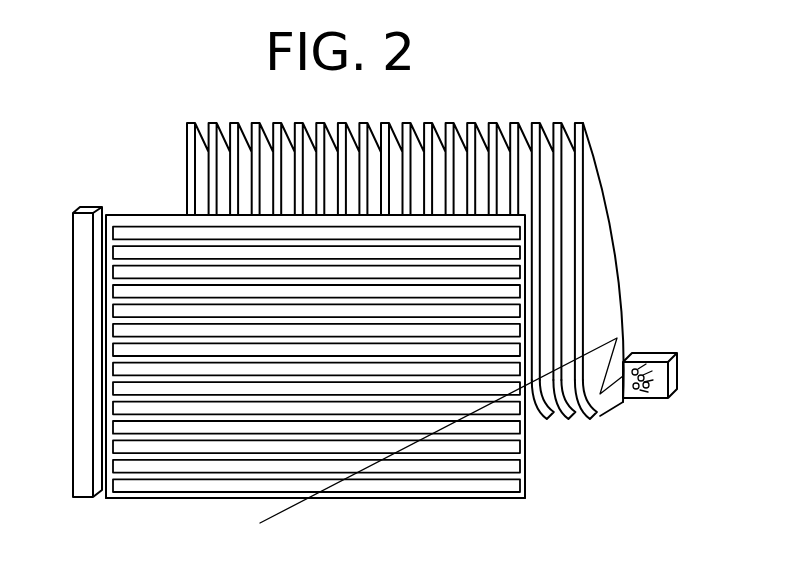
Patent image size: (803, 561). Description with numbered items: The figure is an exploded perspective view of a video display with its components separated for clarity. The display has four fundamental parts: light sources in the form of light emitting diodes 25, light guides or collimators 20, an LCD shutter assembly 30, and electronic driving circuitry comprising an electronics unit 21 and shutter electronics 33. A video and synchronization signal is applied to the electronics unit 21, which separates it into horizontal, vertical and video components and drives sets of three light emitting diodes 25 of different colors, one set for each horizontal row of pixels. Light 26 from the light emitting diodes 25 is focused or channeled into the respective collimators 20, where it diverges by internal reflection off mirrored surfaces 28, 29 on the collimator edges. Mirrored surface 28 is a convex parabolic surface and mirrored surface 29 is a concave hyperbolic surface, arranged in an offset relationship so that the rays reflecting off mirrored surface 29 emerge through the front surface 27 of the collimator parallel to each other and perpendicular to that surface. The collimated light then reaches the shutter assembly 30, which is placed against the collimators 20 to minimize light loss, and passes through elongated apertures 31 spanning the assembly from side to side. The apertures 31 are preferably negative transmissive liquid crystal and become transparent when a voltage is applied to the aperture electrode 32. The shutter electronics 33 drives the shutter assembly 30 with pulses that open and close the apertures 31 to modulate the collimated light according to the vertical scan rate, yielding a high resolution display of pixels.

The light guides 20 is at (442, 285).
The electronics unit 21 is at (652, 356).
The light emitting diodes 25 is at (648, 397).
The light 26 is at (285, 508).
The front surface 27 is at (577, 137).
The mirrored surface 28 is at (556, 417).
The mirrored surface 29 is at (619, 278).
The shutter assembly 30 is at (316, 345).
The apertures 31 is at (158, 233).
The aperture electrode 32 is at (107, 499).
The shutter electronics 33 is at (82, 257).